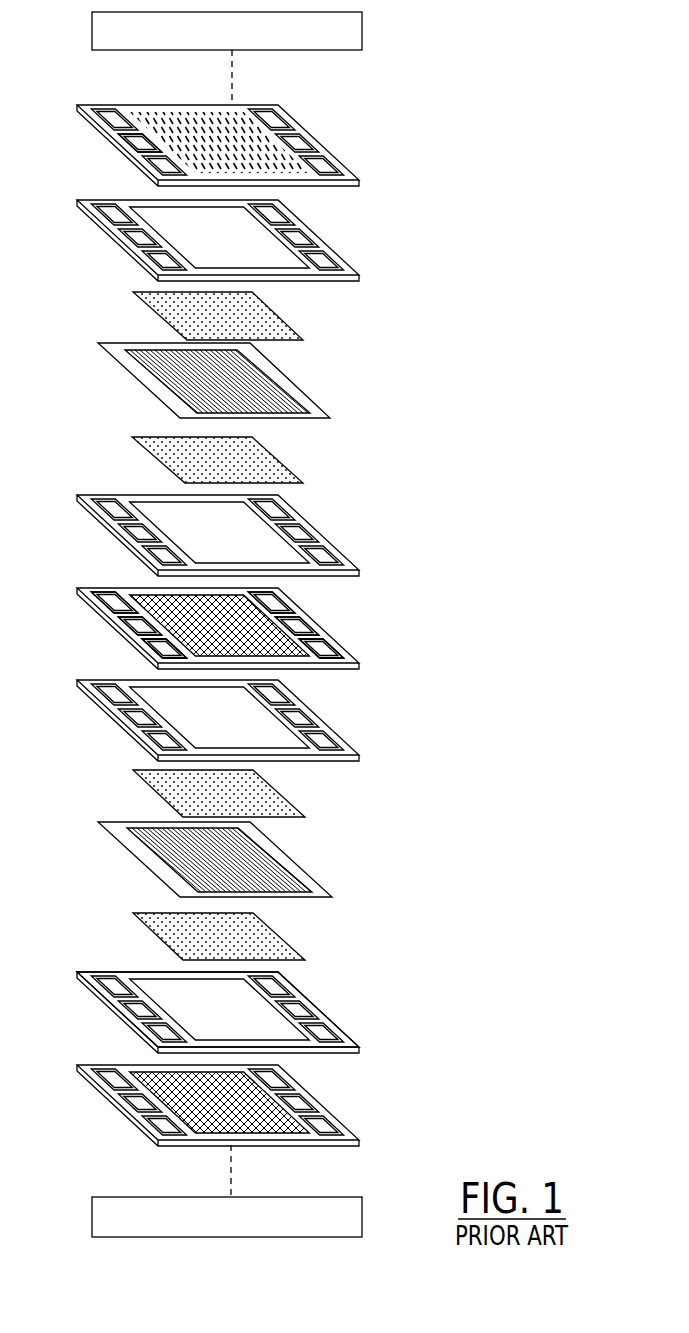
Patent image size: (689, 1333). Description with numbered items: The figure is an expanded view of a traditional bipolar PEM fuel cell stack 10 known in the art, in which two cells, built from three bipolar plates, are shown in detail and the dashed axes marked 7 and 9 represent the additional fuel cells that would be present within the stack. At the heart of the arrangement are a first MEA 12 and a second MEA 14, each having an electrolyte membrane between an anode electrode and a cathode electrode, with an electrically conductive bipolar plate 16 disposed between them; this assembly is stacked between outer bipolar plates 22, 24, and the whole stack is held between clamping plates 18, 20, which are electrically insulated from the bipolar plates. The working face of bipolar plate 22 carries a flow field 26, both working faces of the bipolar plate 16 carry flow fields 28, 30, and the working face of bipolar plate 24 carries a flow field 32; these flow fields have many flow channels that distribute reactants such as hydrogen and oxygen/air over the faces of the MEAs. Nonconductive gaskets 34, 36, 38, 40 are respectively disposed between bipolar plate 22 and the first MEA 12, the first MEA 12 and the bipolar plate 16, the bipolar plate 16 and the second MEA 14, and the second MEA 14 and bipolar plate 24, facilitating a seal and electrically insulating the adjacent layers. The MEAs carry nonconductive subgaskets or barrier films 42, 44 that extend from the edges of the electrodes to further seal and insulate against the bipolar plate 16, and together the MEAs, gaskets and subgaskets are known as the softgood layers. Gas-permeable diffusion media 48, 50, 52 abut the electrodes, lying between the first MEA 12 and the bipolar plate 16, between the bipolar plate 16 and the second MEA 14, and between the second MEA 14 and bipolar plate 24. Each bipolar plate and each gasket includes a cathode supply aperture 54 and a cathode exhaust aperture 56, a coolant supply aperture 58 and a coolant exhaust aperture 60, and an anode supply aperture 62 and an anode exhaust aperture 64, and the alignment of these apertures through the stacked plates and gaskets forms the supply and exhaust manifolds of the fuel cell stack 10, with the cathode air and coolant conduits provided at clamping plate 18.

The additional fuel cell 7 is at (232, 77).
The additional fuel cell 9 is at (230, 1172).
The fuel cell stack 10 is at (482, 339).
The first MEA 12 is at (147, 382).
The second MEA 14 is at (316, 862).
The bipolar plate 16 is at (72, 601).
The clamping plate 18 is at (362, 32).
The clamping plate 20 is at (363, 1208).
The bipolar plate 22 is at (97, 145).
The bipolar plate 24 is at (326, 1083).
The flow field 26 is at (137, 147).
The flow field 28 is at (333, 643).
The flow field 30 is at (137, 648).
The flow field 32 is at (303, 1128).
The nonconductive gasket 34 is at (110, 218).
The nonconductive gasket 36 is at (107, 527).
The nonconductive gasket 38 is at (312, 740).
The nonconductive gasket 40 is at (162, 305).
The subgasket 42 is at (105, 348).
The subgasket 44 is at (138, 857).
The gas-permeable DM 48 is at (157, 453).
The gas-permeable DM 50 is at (270, 795).
The gas-permeable DM 52 is at (270, 940).
The cathode supply aperture 54 is at (100, 592).
The cathode exhaust aperture 56 is at (342, 648).
The coolant supply aperture 58 is at (315, 625).
The coolant exhaust aperture 60 is at (138, 642).
The anode supply aperture 62 is at (290, 602).
The anode exhaust aperture 64 is at (167, 653).